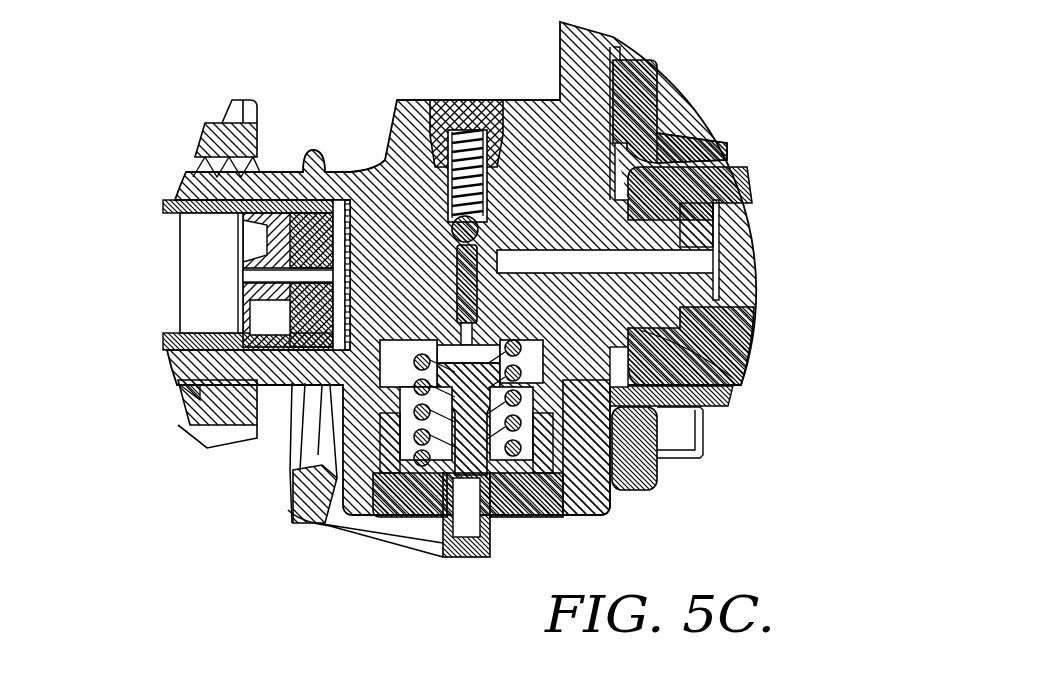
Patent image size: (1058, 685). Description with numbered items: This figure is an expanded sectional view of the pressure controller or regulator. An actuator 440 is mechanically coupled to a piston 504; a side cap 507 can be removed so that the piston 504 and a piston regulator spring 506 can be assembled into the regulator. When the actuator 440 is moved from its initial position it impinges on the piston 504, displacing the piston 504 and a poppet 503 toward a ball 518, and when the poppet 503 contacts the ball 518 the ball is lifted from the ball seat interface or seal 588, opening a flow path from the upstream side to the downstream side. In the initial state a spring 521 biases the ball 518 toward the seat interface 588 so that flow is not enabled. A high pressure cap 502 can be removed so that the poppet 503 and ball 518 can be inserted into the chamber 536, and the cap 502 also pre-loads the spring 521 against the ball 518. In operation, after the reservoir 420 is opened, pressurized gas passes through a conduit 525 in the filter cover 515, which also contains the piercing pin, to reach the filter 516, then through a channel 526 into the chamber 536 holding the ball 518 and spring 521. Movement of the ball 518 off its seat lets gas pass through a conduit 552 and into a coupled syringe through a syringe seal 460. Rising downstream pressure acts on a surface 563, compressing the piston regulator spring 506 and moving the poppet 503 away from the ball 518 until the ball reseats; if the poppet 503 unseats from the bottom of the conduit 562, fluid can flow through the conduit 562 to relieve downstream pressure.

The reservoir 420 is at (200, 277).
The actuator 440 is at (362, 540).
The syringe seal 460 is at (740, 220).
The high pressure cap 502 is at (452, 130).
The poppet 503 is at (718, 142).
The piston 504 is at (468, 530).
The piston regulator spring 506 is at (590, 505).
The side cap 507 is at (556, 505).
The filter cover 515 is at (260, 325).
The filter 516 is at (290, 383).
The ball 518 is at (500, 250).
The spring 521 is at (463, 130).
The conduit 525 is at (243, 248).
The channel 526 is at (302, 172).
The chamber 536 is at (438, 195).
The conduit 552 is at (695, 258).
The conduit 562 is at (660, 478).
The surface 563 is at (745, 373).
The ball seat interface 588 is at (505, 265).